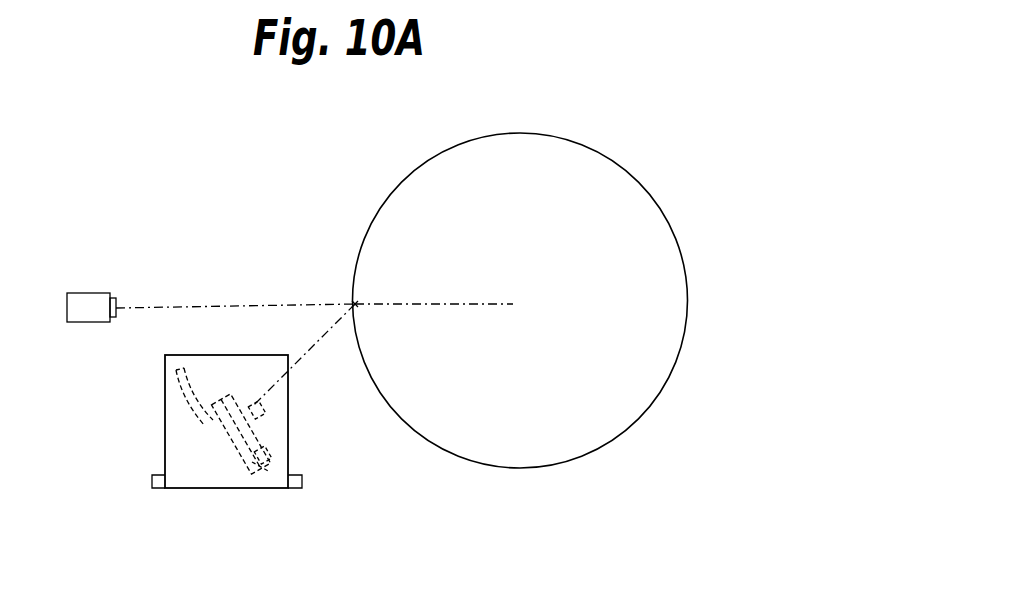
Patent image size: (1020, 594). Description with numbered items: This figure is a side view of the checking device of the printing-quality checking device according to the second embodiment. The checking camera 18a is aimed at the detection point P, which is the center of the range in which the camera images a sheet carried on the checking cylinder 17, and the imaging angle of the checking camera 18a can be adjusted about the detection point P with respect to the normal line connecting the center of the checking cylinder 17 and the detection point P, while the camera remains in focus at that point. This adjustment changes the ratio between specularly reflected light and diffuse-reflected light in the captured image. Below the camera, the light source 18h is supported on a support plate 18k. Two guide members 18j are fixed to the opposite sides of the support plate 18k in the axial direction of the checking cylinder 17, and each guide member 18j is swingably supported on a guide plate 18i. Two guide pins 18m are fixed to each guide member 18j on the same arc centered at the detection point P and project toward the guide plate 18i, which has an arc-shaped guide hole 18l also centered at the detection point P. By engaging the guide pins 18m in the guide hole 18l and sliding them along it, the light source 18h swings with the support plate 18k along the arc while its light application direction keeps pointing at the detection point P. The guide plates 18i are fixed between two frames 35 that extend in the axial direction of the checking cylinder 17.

The checking cylinder 17 is at (545, 150).
The checking camera 18a is at (88, 308).
The detection point P is at (355, 304).
The guide plate 18i is at (238, 368).
The frame 35 is at (157, 488).
The guide member 18j is at (220, 458).
The light source 18h is at (258, 410).
The support plate 18k is at (264, 442).
The guide hole 18l is at (262, 470).
The guide pin 18m is at (215, 425).